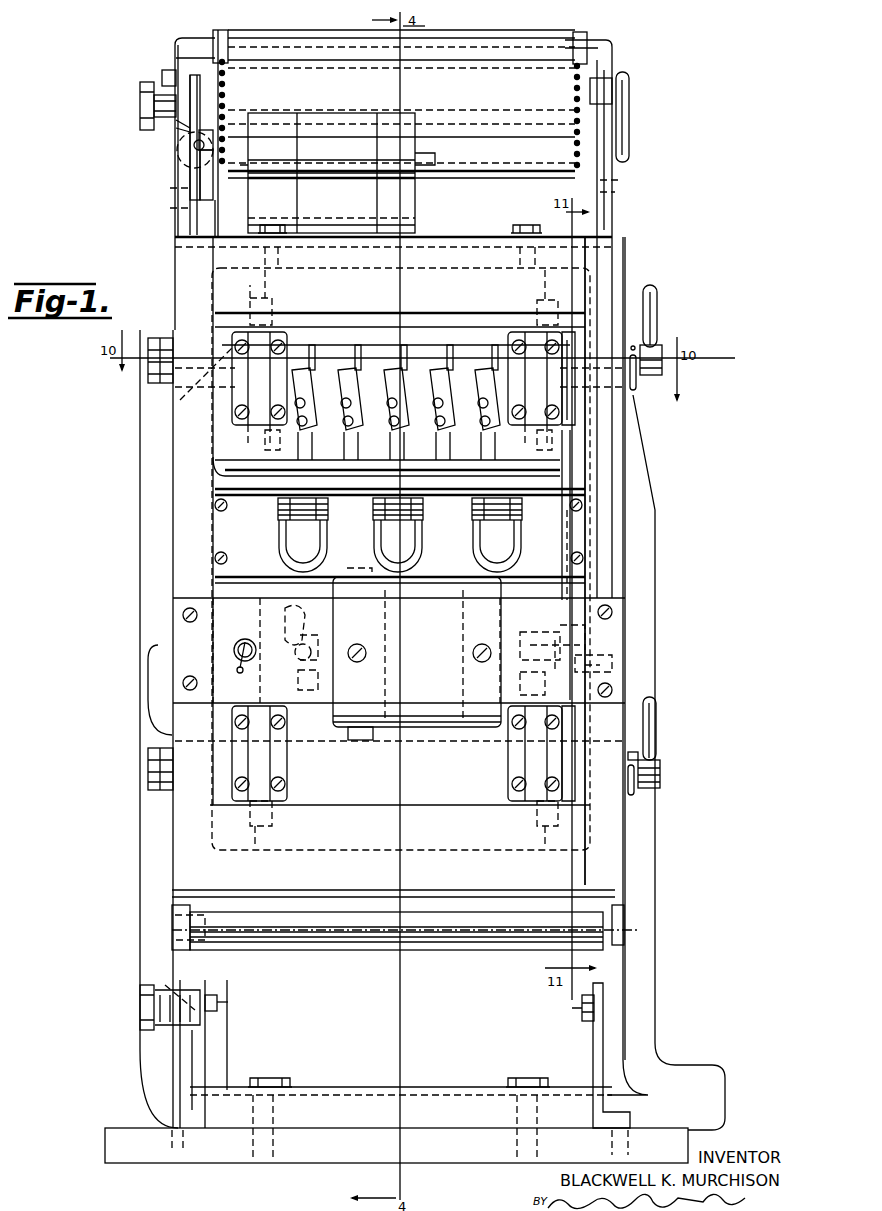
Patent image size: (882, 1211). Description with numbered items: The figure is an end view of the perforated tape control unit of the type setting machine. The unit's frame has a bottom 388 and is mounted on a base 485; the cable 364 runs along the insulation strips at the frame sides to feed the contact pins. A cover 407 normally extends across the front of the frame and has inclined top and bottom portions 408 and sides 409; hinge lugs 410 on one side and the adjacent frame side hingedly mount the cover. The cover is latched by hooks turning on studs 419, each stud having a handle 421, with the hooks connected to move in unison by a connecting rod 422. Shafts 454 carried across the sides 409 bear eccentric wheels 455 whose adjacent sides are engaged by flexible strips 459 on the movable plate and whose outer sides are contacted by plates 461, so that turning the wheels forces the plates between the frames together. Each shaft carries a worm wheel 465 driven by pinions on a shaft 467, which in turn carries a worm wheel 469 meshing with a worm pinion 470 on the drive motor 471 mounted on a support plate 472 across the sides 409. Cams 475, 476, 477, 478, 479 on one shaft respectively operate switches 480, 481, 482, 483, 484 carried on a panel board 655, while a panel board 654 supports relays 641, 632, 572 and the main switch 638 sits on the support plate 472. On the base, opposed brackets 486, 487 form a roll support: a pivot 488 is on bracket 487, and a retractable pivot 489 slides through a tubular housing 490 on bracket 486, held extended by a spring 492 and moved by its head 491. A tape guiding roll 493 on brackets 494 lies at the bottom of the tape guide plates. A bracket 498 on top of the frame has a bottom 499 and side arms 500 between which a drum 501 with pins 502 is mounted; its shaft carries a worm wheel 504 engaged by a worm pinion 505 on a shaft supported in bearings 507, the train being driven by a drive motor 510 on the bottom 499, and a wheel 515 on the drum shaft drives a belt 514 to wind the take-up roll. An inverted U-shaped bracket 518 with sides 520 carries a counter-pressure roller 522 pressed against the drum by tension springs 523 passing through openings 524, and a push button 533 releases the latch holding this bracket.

The cable 364 is at (153, 838).
The bottom 388 is at (306, 1085).
The cover 407 is at (630, 480).
The inclined top and bottom portions 408 is at (418, 293).
The sides 409 is at (187, 488).
The hinge lugs 410 is at (150, 385).
The studs 419 is at (648, 378).
The handle 421 is at (658, 297).
The connecting rod 422 is at (640, 400).
The shafts 454 is at (200, 395).
The wheels 455 is at (258, 324).
The flexible strips 459 is at (263, 300).
The plates 461 is at (282, 345).
The worm wheels 465 is at (576, 345).
The shaft 467 is at (582, 537).
The worm wheel 469 is at (614, 658).
The worm pinion 470 is at (644, 636).
The drive motor 471 is at (432, 716).
The support plate 472 is at (618, 610).
The cam 475 is at (315, 353).
The cam 476 is at (325, 352).
The cam 477 is at (372, 346).
The cam 478 is at (448, 351).
The cam 479 is at (492, 351).
The switch 480 is at (318, 437).
The switch 481 is at (364, 437).
The switch 482 is at (407, 437).
The switch 483 is at (452, 437).
The switch 484 is at (496, 437).
The base 485 is at (210, 1148).
The bracket 486 is at (208, 1044).
The bracket 487 is at (601, 1050).
The pivot 488 is at (572, 1007).
The retractable pivot 489 is at (230, 1006).
The tubular housing 490 is at (182, 126).
The head 491 is at (143, 93).
The spring 492 is at (168, 985).
The tape guiding roll 493 is at (432, 928).
The brackets 494 is at (172, 921).
The bracket 498 is at (613, 222).
The bottom 499 is at (215, 232).
The side arms 500 is at (150, 116).
The drum 501 is at (466, 80).
The pins 502 is at (228, 88).
The worm wheel 504 is at (200, 133).
The worm pinion 505 is at (200, 153).
The bearings 507 is at (205, 200).
The drive motor 510 is at (418, 196).
The belt 514 is at (618, 78).
The wheel 515 is at (632, 92).
The inverted U-shaped bracket 518 is at (184, 39).
The sides 520 is at (180, 55).
The counter-pressure roller 522 is at (338, 42).
The tension springs 523 is at (180, 196).
The openings 524 is at (170, 210).
The push button 533 is at (170, 78).
The relay 572 is at (487, 557).
The relay 632 is at (375, 560).
The main switch 638 is at (245, 640).
The relay 641 is at (282, 563).
The panel board 654 is at (586, 524).
The panel board 655 is at (586, 478).